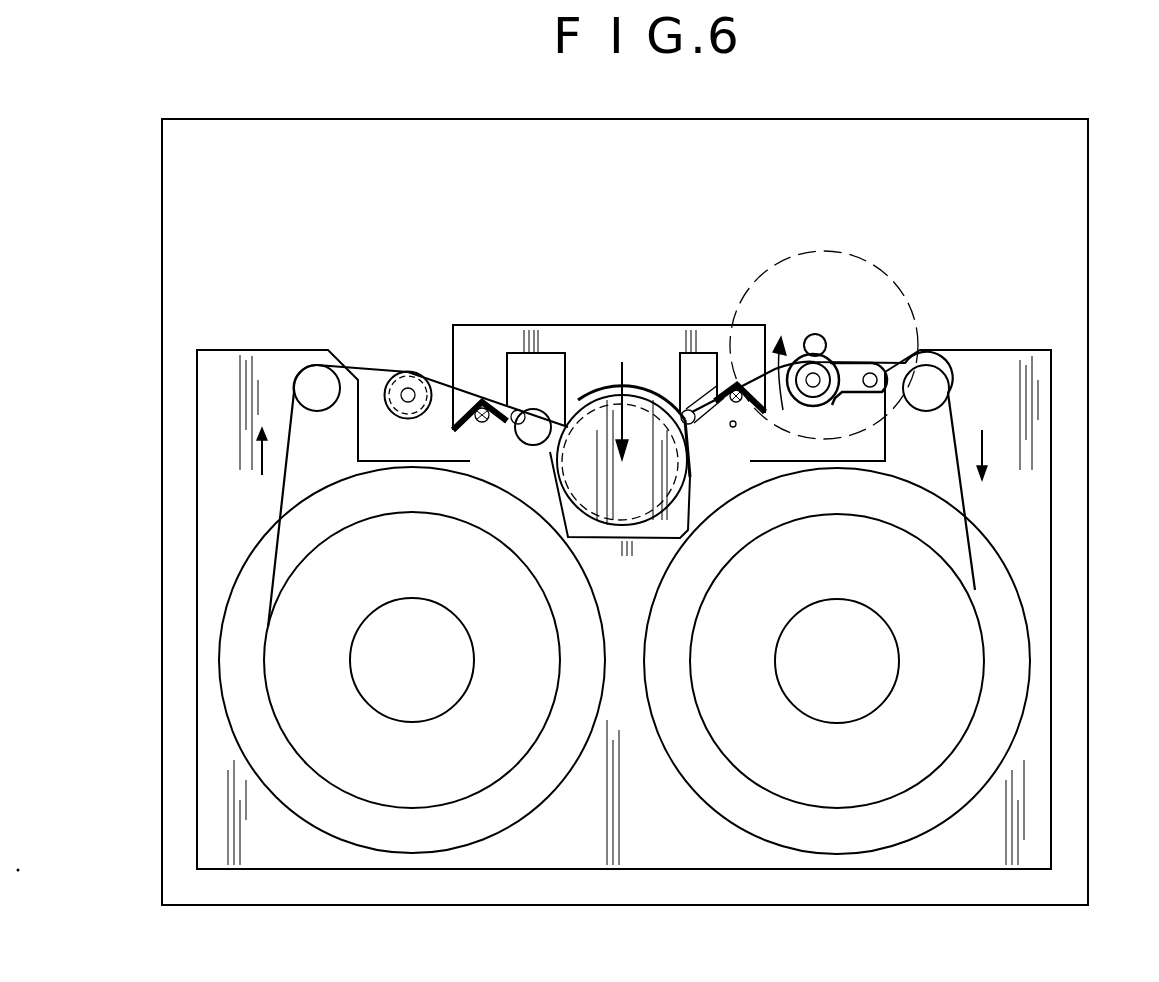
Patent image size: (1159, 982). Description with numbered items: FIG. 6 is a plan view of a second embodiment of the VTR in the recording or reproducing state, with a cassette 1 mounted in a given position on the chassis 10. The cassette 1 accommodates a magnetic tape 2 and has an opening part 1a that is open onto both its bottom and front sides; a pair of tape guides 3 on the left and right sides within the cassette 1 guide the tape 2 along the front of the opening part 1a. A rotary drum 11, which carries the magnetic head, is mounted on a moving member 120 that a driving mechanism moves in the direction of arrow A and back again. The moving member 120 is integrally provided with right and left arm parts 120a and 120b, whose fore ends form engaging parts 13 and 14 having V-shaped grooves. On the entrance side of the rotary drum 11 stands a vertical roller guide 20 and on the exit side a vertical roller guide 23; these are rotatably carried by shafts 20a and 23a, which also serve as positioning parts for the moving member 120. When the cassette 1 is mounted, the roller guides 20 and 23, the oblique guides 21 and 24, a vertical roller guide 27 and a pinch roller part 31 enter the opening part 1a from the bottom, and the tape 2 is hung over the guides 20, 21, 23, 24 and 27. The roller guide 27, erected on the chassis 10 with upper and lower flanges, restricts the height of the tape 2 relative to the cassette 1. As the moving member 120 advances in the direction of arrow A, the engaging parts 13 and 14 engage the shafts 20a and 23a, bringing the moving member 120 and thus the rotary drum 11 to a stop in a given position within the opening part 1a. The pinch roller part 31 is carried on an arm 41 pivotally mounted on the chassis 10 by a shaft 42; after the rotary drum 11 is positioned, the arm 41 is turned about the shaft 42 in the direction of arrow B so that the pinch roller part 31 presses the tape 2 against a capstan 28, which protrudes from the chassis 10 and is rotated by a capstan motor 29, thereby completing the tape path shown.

The cassette 1 is at (1035, 368).
The opening part 1a is at (438, 356).
The magnetic tape 2 is at (273, 509).
The tape guides 3 is at (315, 388).
The chassis 10 is at (331, 160).
The rotary drum 11 is at (640, 415).
The engaging part 13 is at (479, 423).
The engaging part 14 is at (733, 428).
The vertical roller guide 20 is at (480, 396).
The shaft 20a is at (516, 424).
The oblique guide 21 is at (531, 432).
The vertical roller guide 23 is at (748, 393).
The shaft 23a is at (743, 404).
The oblique guide 24 is at (690, 425).
The vertical roller guide 27 is at (405, 390).
The capstan 28 is at (816, 336).
The capstan motor 29 is at (821, 250).
The pinch roller part 31 is at (817, 395).
The arm 41 is at (845, 370).
The shaft 42 is at (872, 372).
The moving member 120 is at (592, 353).
The arm part 120a is at (468, 348).
The arm part 120b is at (728, 360).
The arrow A is at (607, 360).
The arrow B is at (784, 415).